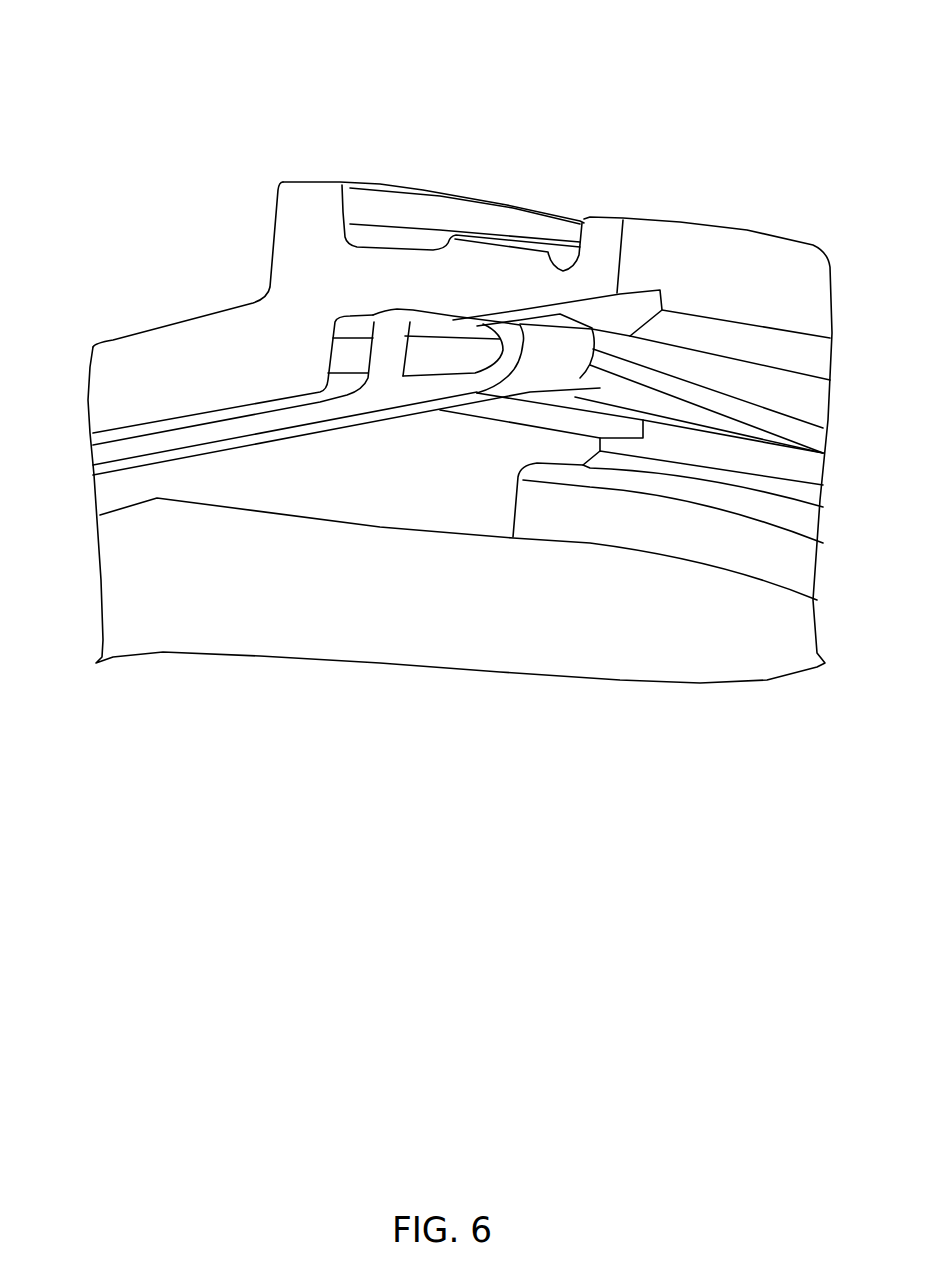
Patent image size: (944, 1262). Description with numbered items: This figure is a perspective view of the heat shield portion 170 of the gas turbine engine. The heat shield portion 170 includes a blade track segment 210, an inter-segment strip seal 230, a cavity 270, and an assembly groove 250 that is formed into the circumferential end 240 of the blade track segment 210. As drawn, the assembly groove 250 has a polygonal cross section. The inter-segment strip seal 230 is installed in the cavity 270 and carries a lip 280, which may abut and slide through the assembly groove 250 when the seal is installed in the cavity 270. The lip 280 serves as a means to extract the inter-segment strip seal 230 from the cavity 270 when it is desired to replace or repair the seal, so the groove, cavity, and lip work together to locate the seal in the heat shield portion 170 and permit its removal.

The heat shield portion 170 is at (343, 158).
The blade track segment 210 is at (515, 198).
The inter-segment strip seal 230 is at (153, 448).
The circumferential end 240 is at (317, 257).
The assembly groove 250 is at (615, 313).
The cavity 270 is at (216, 407).
The lip 280 is at (515, 340).